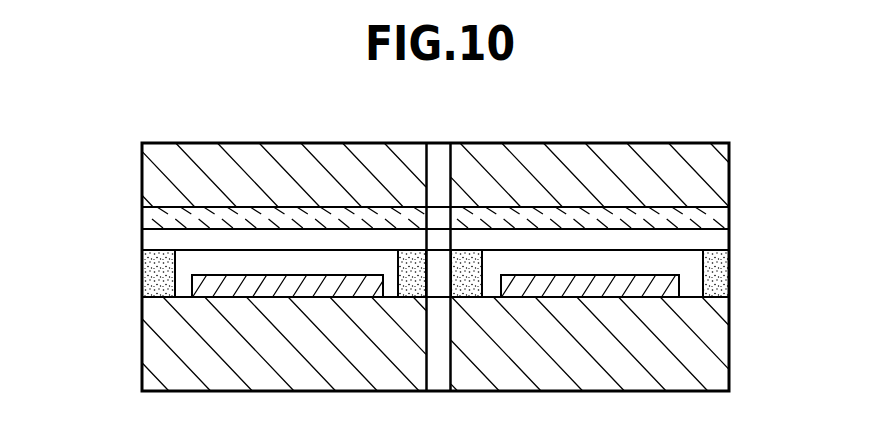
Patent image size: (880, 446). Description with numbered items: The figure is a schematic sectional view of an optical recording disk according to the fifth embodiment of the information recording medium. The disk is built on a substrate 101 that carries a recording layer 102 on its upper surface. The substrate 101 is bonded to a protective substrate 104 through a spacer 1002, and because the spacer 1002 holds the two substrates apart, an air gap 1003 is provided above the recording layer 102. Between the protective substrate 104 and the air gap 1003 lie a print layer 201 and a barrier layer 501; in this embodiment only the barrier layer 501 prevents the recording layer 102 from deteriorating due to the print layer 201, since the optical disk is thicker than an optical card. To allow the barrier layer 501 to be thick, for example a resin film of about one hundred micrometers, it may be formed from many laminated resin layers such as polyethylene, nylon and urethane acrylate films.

The substrate 101 is at (717, 348).
The recording layer 102 is at (681, 284).
The protective substrate 104 is at (713, 170).
The print layer 201 is at (718, 220).
The barrier layer 501 is at (715, 240).
The spacer 1002 is at (150, 280).
The air gap 1003 is at (715, 262).